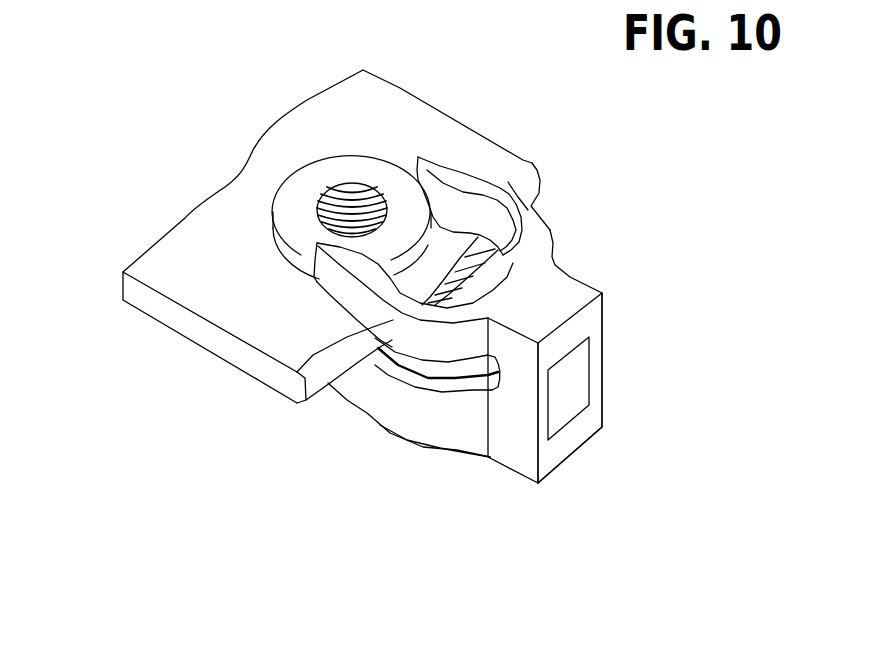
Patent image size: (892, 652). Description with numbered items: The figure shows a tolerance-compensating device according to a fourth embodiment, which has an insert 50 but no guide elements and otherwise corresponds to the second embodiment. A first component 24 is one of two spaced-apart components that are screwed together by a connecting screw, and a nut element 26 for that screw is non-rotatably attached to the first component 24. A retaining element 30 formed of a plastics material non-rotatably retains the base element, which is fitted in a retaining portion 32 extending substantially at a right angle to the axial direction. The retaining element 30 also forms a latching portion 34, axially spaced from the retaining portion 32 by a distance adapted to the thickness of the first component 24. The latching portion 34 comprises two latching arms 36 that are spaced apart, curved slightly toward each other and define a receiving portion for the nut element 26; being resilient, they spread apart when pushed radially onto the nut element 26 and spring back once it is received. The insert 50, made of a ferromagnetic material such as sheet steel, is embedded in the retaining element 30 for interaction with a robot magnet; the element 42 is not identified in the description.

The first component 24 is at (163, 310).
The nut element 26 is at (297, 170).
The retaining element 30 is at (350, 402).
The retaining portion 32 is at (420, 408).
The latching portion 34 is at (553, 232).
The latching arms 36 is at (490, 189).
The side wall 42 is at (572, 443).
The insert 50 is at (593, 377).